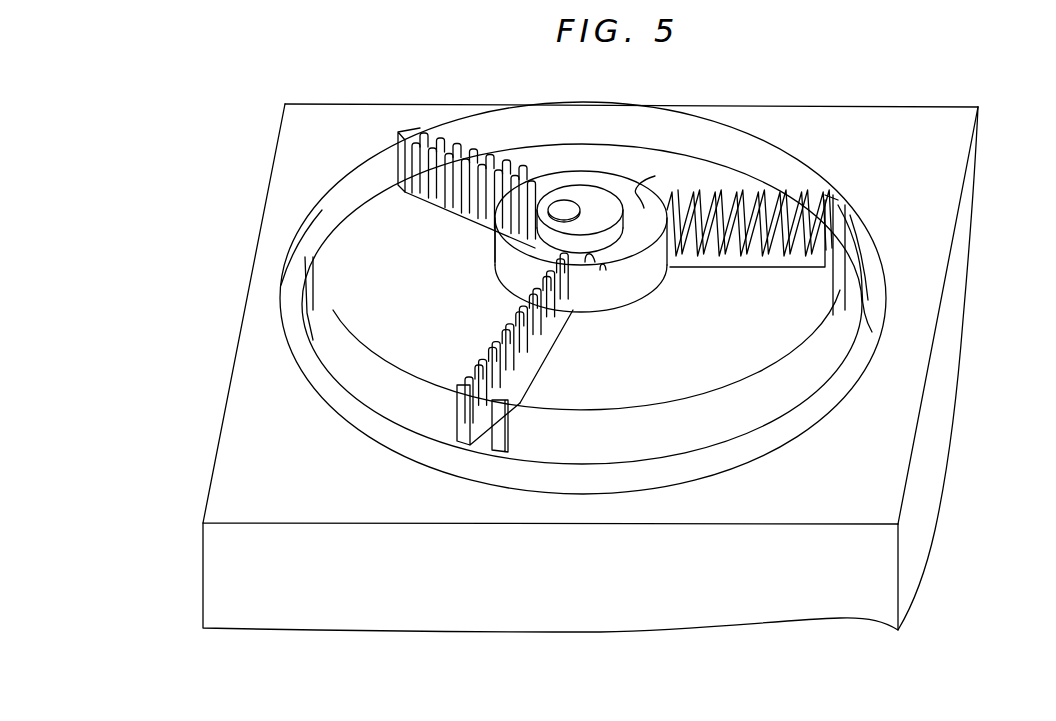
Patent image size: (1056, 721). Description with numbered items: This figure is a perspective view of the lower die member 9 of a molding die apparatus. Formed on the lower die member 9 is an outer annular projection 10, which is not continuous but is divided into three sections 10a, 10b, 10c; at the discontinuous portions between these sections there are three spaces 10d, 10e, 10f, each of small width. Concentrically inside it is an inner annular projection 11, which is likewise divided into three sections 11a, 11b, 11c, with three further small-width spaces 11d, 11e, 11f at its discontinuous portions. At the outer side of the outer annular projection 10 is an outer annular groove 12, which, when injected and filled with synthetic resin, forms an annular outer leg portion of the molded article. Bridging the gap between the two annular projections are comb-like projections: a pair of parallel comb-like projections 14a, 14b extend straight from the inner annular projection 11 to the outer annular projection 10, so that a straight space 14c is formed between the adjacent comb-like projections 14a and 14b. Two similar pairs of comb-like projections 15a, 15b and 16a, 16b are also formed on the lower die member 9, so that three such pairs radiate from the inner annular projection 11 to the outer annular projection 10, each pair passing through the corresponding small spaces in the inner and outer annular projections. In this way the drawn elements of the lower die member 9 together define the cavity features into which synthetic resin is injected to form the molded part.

The lower die member 9 is at (938, 414).
The outer annular projection 10 is at (817, 356).
The section of outer annular projection 10a is at (652, 440).
The section of outer annular projection 10b is at (734, 140).
The section of outer annular projection 10c is at (328, 332).
The space 10d is at (487, 440).
The space 10e is at (838, 197).
The space 10f is at (418, 133).
The inner annular projection 11 is at (615, 171).
The section of inner annular projection 11a is at (652, 288).
The section of inner annular projection 11b is at (585, 172).
The section of inner annular projection 11c is at (493, 258).
The space 11d is at (590, 265).
The space 11e is at (663, 184).
The space 11f is at (537, 175).
The outer annular groove 12 is at (862, 290).
The comb-like projection 14a is at (547, 357).
The comb-like projection 14b is at (503, 320).
The straight space 14c is at (467, 440).
The comb-like projection 15a is at (765, 262).
The comb-like projection 15b is at (762, 190).
The comb-like projection 16a is at (456, 130).
The comb-like projection 16b is at (424, 198).